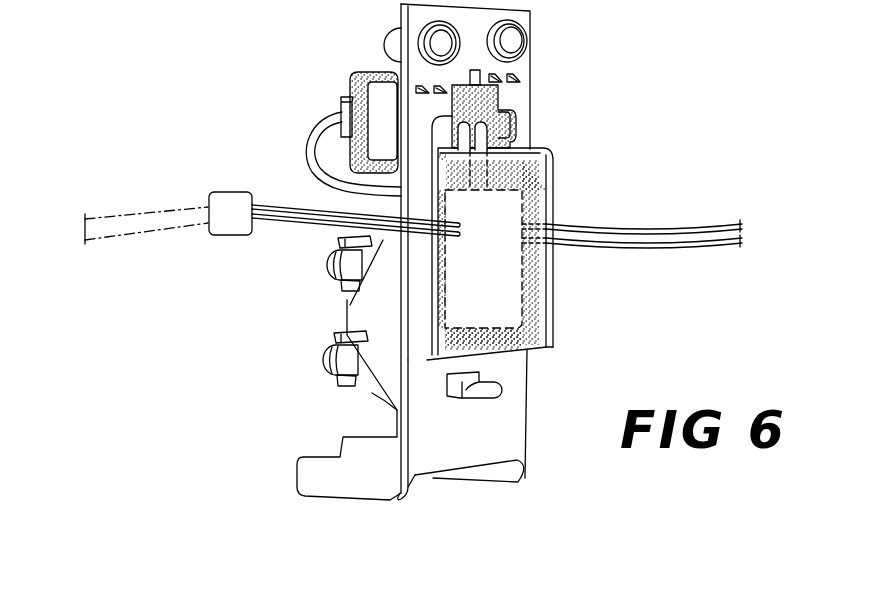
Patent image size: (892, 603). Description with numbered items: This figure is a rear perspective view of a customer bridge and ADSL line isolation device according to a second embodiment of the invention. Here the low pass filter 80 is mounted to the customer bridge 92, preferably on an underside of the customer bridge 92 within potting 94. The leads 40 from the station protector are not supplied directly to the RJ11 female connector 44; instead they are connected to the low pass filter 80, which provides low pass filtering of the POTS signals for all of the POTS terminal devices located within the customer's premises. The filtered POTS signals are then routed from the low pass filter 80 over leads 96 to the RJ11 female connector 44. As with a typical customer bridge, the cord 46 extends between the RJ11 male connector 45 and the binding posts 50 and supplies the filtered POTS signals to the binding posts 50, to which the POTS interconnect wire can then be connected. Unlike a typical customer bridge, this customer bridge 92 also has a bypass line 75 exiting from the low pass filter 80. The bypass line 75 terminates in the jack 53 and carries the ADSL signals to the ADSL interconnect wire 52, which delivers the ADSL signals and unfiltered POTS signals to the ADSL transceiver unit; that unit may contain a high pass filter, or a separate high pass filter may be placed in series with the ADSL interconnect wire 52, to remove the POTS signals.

The leads 40 is at (740, 228).
The RJ11 female connector 44 is at (357, 77).
The RJ11 male connector 45 is at (340, 105).
The cord 46 is at (315, 137).
The binding posts 50 is at (325, 265).
The ADSL interconnect wire 52 is at (160, 212).
The jack 53 is at (233, 198).
The bypass line 75 is at (307, 207).
The low pass filter 80 is at (515, 190).
The customer bridge 92 is at (523, 63).
The potting 94 is at (533, 287).
The leads 96 is at (510, 120).